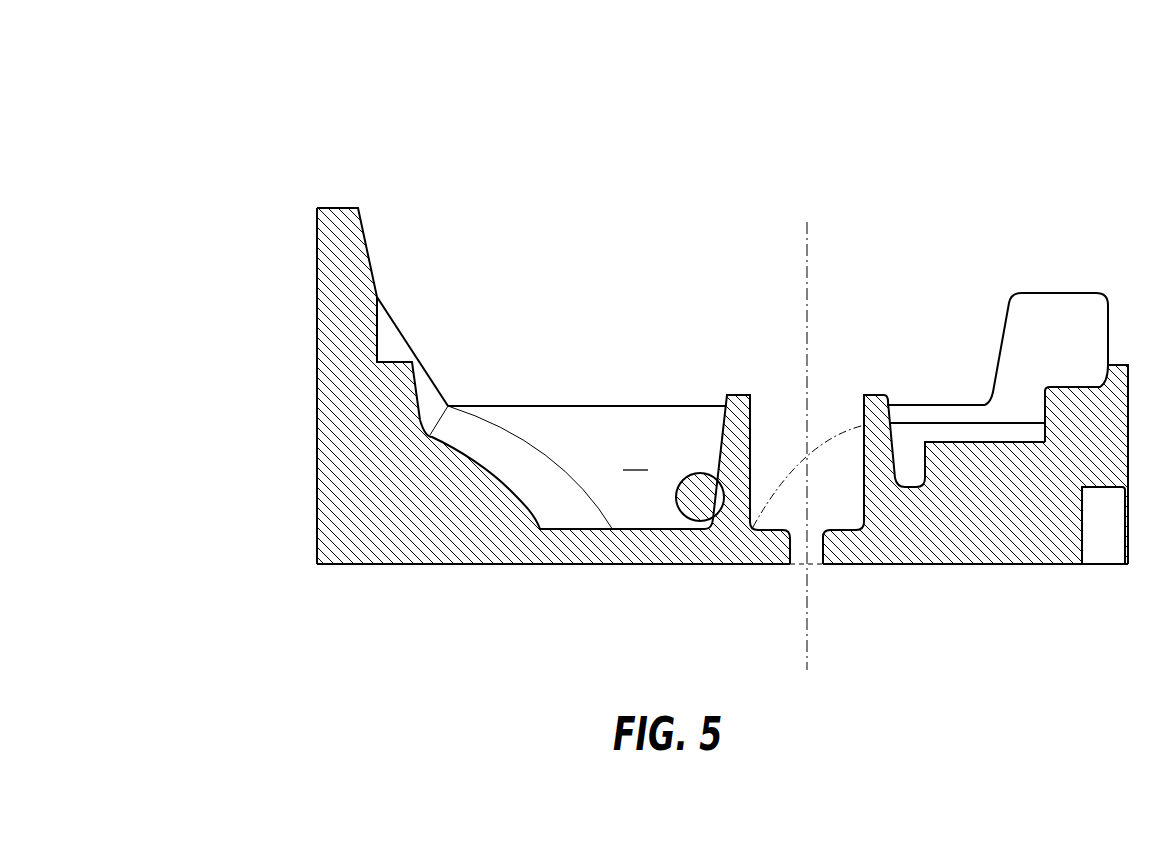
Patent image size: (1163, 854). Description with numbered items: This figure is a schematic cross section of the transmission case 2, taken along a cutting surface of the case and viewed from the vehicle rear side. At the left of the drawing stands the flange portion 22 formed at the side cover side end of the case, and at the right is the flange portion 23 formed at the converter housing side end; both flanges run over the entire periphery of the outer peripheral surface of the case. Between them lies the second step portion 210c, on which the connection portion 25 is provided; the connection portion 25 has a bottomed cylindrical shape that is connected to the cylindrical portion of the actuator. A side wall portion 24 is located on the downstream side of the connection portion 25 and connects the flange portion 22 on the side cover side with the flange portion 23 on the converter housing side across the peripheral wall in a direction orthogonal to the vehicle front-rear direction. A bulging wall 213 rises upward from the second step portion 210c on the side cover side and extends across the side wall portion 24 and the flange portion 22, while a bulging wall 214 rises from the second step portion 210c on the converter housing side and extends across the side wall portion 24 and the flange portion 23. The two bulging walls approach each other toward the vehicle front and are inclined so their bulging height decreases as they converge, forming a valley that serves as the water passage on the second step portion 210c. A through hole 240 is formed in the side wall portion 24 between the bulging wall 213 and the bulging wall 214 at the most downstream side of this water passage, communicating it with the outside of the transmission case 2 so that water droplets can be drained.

The transmission case 2 is at (316, 501).
The flange portion 22 is at (337, 204).
The flange portion 23 is at (1076, 383).
The side wall portion 24 is at (707, 400).
The connection portion 25 is at (879, 392).
The bulging wall 213 is at (497, 442).
The bulging wall 214 is at (836, 436).
The through hole 240 is at (690, 495).
The second step portion 210c is at (658, 542).